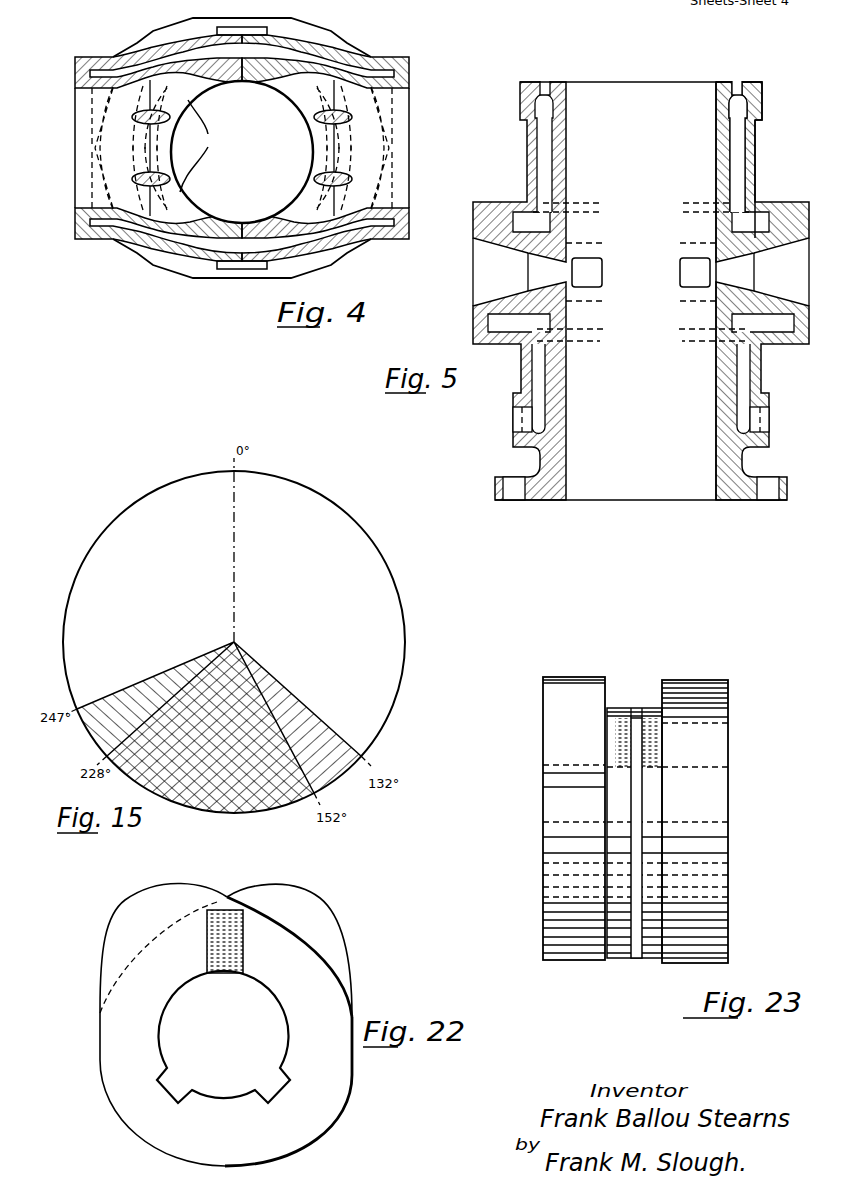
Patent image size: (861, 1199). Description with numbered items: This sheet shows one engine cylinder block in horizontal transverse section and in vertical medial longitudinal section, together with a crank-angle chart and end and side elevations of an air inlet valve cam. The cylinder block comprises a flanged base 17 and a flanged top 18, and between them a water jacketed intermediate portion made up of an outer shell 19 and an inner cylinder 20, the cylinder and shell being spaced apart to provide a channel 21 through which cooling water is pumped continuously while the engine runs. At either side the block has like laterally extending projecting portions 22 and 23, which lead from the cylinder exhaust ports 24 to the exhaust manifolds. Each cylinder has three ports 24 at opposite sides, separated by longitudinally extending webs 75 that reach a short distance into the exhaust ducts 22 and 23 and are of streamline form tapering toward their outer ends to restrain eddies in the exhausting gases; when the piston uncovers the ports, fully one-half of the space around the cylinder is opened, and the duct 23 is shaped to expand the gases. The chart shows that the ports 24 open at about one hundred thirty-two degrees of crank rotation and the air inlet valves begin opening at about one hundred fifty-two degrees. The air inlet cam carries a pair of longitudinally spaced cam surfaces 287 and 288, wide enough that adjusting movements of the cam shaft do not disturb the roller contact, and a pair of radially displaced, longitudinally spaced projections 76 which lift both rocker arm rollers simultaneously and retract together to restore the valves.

In FIG. 5, the flanged base 17 is at (782, 497).
In FIG. 5, the flanged top 18 is at (768, 114).
In FIG. 5, the outer shell 19 is at (757, 158).
In FIG. 5, the inner cylinder 20 is at (716, 152).
In FIG. 5, the channel 21 is at (742, 176).
In FIG. 4, the laterally extending projecting portion 22 is at (76, 156).
In FIG. 5, the laterally extending projecting portion 22 is at (473, 277).
In FIG. 4, the laterally extending projecting portion 23 is at (404, 160).
In FIG. 5, the laterally extending projecting portion 23 is at (818, 277).
In FIG. 4, the cylinder exhaust port 24 is at (168, 152).
In FIG. 5, the cylinder exhaust port 24 is at (582, 256).
In FIG. 4, the longitudinally extending web 75 is at (166, 121).
In FIG. 22, the cam projection 76 is at (160, 888).
In FIG. 23, the cam projection 76 is at (663, 680).
In FIG. 22, the cam surface 287 is at (107, 960).
In FIG. 23, the cam surface 287 is at (545, 727).
In FIG. 22, the cam surface 288 is at (224, 896).
In FIG. 23, the cam surface 288 is at (728, 733).